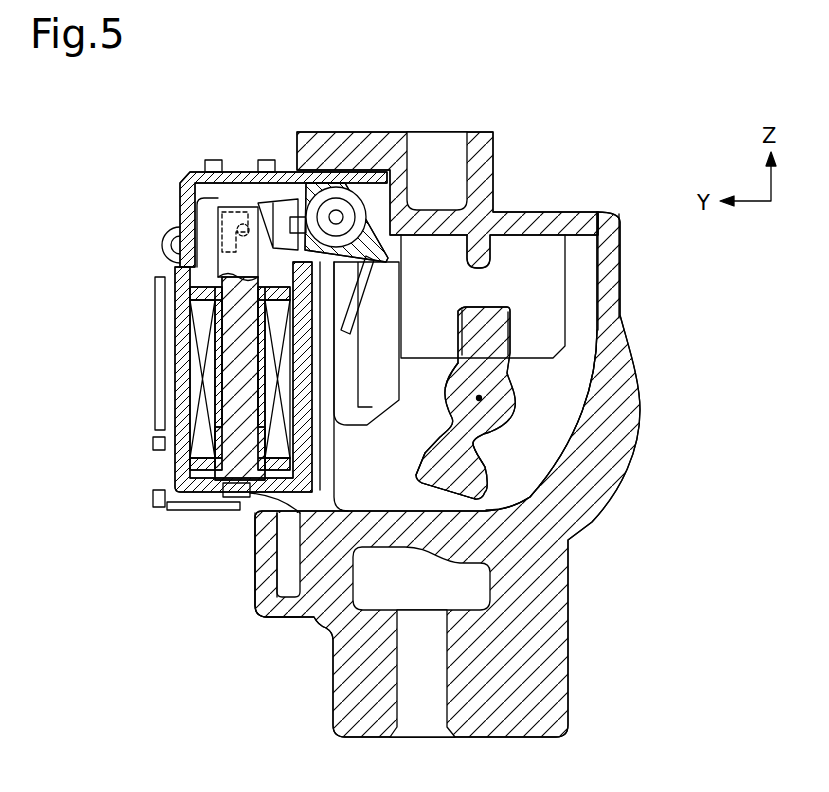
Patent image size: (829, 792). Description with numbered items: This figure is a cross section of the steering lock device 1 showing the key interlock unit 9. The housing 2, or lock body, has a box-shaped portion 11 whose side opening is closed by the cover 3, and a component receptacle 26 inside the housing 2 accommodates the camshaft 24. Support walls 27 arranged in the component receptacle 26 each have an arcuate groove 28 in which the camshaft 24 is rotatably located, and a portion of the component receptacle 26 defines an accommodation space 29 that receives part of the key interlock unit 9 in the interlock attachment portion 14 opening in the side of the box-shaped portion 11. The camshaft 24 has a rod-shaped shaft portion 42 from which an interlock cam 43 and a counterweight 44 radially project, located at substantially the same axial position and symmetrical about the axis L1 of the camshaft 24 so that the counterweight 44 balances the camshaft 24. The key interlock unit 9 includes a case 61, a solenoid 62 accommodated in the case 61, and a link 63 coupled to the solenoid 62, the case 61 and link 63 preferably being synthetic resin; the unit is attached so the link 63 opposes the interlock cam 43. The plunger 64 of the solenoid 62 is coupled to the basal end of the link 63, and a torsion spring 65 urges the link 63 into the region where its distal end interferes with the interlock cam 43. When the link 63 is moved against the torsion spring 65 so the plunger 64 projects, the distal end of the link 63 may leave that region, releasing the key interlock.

The steering lock device 1 is at (94, 154).
The housing 2 is at (642, 403).
The cover 3 is at (560, 212).
The key interlock unit 9 is at (185, 170).
The box-shaped portion 11 is at (615, 263).
The interlock attachment portion 14 is at (256, 540).
The camshaft 24 is at (505, 395).
The component receptacle 26 is at (592, 293).
The accommodation space 29 is at (558, 296).
The support wall 27 is at (555, 463).
The arcuate groove 28 is at (500, 417).
The shaft portion 42 is at (458, 376).
The interlock cam 43 is at (425, 483).
The counterweight 44 is at (498, 322).
The case 61 is at (185, 203).
The solenoid 62 is at (183, 350).
The link 63 is at (381, 392).
The plunger 64 is at (252, 205).
The torsion spring 65 is at (366, 278).
The axis of the camshaft L1 is at (481, 398).